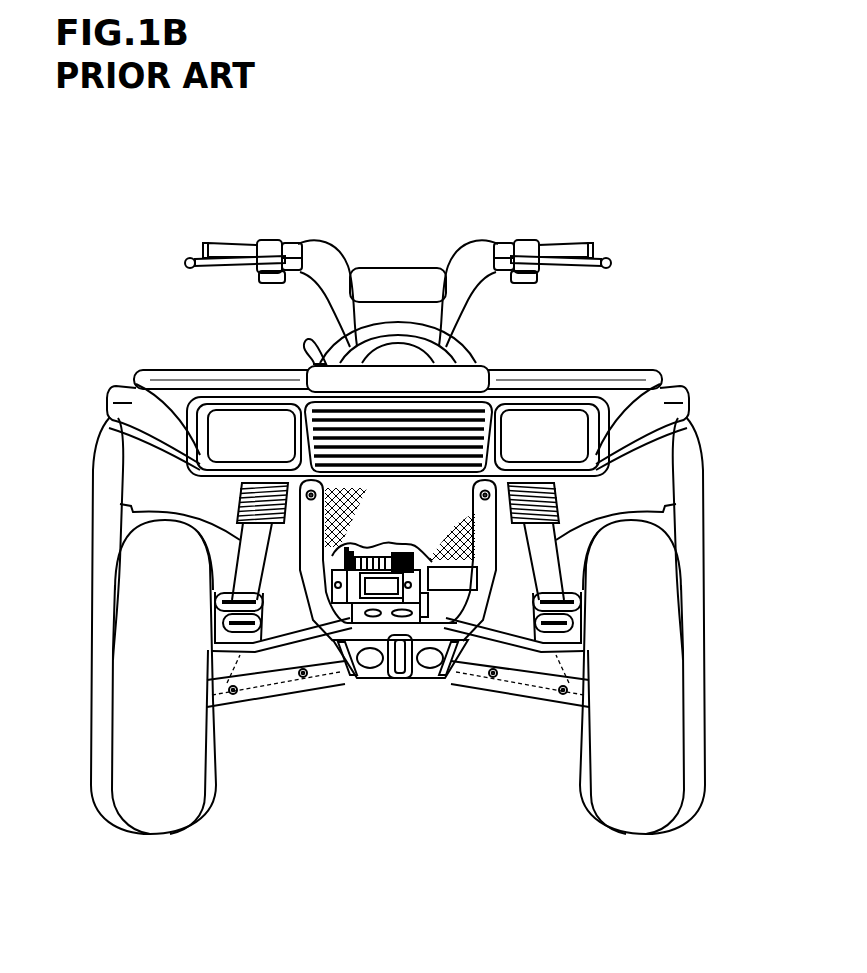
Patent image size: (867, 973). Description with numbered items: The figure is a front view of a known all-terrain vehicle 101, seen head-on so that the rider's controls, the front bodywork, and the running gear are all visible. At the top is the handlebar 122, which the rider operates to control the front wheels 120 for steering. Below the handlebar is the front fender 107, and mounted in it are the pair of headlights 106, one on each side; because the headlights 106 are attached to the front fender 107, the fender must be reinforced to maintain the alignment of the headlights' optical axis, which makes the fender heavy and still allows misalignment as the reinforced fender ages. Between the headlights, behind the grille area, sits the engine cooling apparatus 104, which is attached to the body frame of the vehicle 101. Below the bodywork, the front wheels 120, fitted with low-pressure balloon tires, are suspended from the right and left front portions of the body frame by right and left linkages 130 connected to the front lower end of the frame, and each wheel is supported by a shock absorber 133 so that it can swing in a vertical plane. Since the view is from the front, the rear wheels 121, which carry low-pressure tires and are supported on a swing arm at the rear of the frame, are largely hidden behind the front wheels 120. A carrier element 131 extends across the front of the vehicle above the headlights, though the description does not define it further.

The all-terrain vehicle 101 is at (81, 164).
The engine cooling apparatus 104 is at (305, 615).
The headlights 106 is at (233, 426).
The front fender 107 is at (157, 403).
The front wheels 120 is at (147, 807).
The rear wheels 121 is at (100, 782).
The handlebar 122 is at (388, 318).
The linkages 130 is at (267, 660).
The front carrier rack 131 is at (548, 381).
The shock absorbers 133 is at (238, 538).